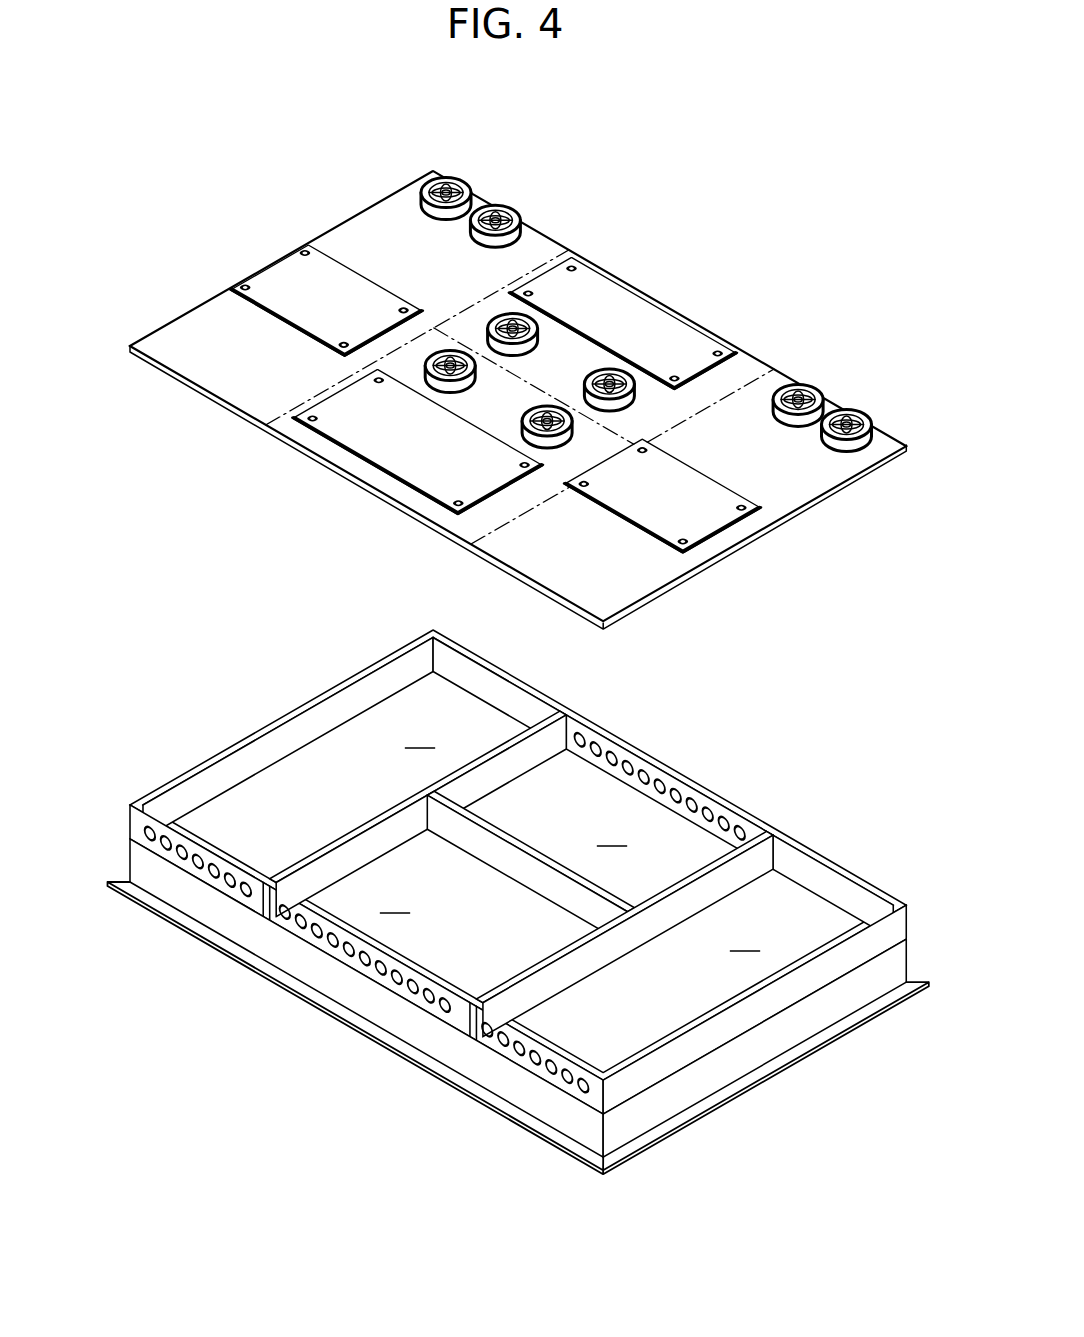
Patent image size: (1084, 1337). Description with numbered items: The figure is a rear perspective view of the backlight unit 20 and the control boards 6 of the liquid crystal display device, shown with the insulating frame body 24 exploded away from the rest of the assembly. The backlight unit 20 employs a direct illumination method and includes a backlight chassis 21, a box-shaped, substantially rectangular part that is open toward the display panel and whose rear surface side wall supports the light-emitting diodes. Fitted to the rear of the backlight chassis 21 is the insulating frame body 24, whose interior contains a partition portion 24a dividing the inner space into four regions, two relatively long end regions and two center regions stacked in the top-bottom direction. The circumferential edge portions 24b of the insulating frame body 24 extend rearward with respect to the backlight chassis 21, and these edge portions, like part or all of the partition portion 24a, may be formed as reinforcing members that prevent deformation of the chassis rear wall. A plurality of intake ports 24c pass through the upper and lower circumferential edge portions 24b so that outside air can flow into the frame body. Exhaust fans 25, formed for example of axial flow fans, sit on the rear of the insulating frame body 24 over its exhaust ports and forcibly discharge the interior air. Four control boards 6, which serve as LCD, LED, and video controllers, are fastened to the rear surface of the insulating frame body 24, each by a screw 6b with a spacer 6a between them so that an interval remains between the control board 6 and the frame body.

The backlight unit 20 is at (495, 649).
The insulating frame body 24 is at (484, 667).
The backlight chassis 21 is at (518, 1038).
The control board 6 is at (516, 382).
The spacer 6a is at (516, 403).
The screw 6b is at (514, 387).
The exhaust fan 25 is at (649, 324).
The partition portion 24a is at (521, 873).
The circumferential edge portion 24b is at (518, 901).
The intake port 24c is at (428, 944).